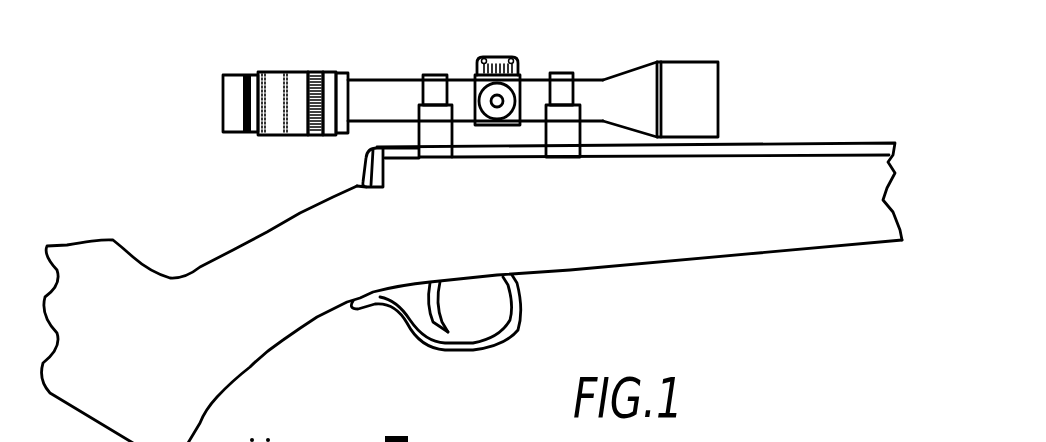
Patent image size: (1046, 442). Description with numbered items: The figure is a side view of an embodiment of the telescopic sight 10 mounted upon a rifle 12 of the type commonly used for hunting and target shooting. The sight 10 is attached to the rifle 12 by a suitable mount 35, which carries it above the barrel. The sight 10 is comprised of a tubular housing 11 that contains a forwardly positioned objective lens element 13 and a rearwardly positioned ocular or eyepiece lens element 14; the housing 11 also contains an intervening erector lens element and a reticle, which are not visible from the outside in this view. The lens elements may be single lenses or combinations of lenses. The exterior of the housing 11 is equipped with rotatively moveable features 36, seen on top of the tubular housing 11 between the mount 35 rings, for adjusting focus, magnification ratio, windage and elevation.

The telescopic sight 10 is at (565, 47).
The tubular housing 11 is at (390, 79).
The rifle 12 is at (688, 223).
The objective lens element 13 is at (702, 61).
The eyepiece lens element 14 is at (272, 73).
The mount 35 is at (557, 137).
The rotatively moveable features 36 is at (506, 57).